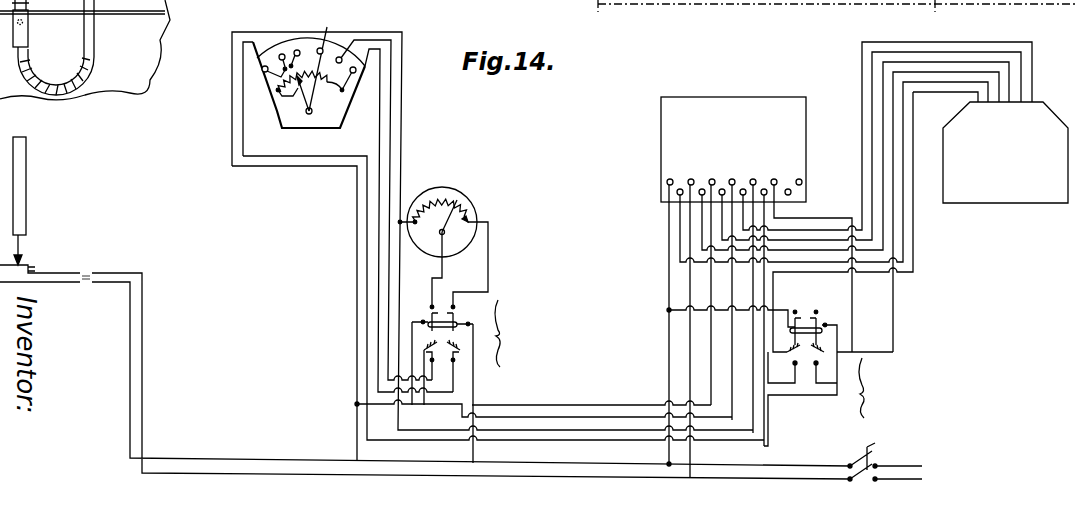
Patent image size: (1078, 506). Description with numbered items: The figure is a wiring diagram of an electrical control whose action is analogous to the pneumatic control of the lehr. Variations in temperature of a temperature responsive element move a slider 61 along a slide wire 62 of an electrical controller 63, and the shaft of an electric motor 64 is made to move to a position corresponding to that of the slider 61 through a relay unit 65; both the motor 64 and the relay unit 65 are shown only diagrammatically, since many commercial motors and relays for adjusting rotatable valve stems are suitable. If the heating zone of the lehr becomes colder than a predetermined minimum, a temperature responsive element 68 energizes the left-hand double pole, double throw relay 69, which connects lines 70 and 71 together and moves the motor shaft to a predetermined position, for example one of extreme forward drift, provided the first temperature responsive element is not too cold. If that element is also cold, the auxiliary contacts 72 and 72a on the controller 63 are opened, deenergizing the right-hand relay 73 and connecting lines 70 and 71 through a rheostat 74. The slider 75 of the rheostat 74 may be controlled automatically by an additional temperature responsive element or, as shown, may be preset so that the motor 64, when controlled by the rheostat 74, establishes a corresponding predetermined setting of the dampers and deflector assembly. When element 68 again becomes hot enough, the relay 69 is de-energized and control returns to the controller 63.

The slider 61 is at (304, 116).
The slide wire 62 is at (344, 93).
The electrical controller 63 is at (301, 37).
The electric motor 64 is at (990, 203).
The relay unit 65 is at (737, 102).
The temperature responsive element 68 is at (28, 184).
The left-hand double pole, double throw relay 69 is at (468, 352).
The line 70 is at (313, 97).
The line 71 is at (325, 58).
The auxiliary contact 72 is at (279, 79).
The auxiliary contact 72a is at (281, 54).
The right-hand relay 73 is at (825, 378).
The rheostat 74 is at (452, 188).
The slider 75 is at (470, 213).